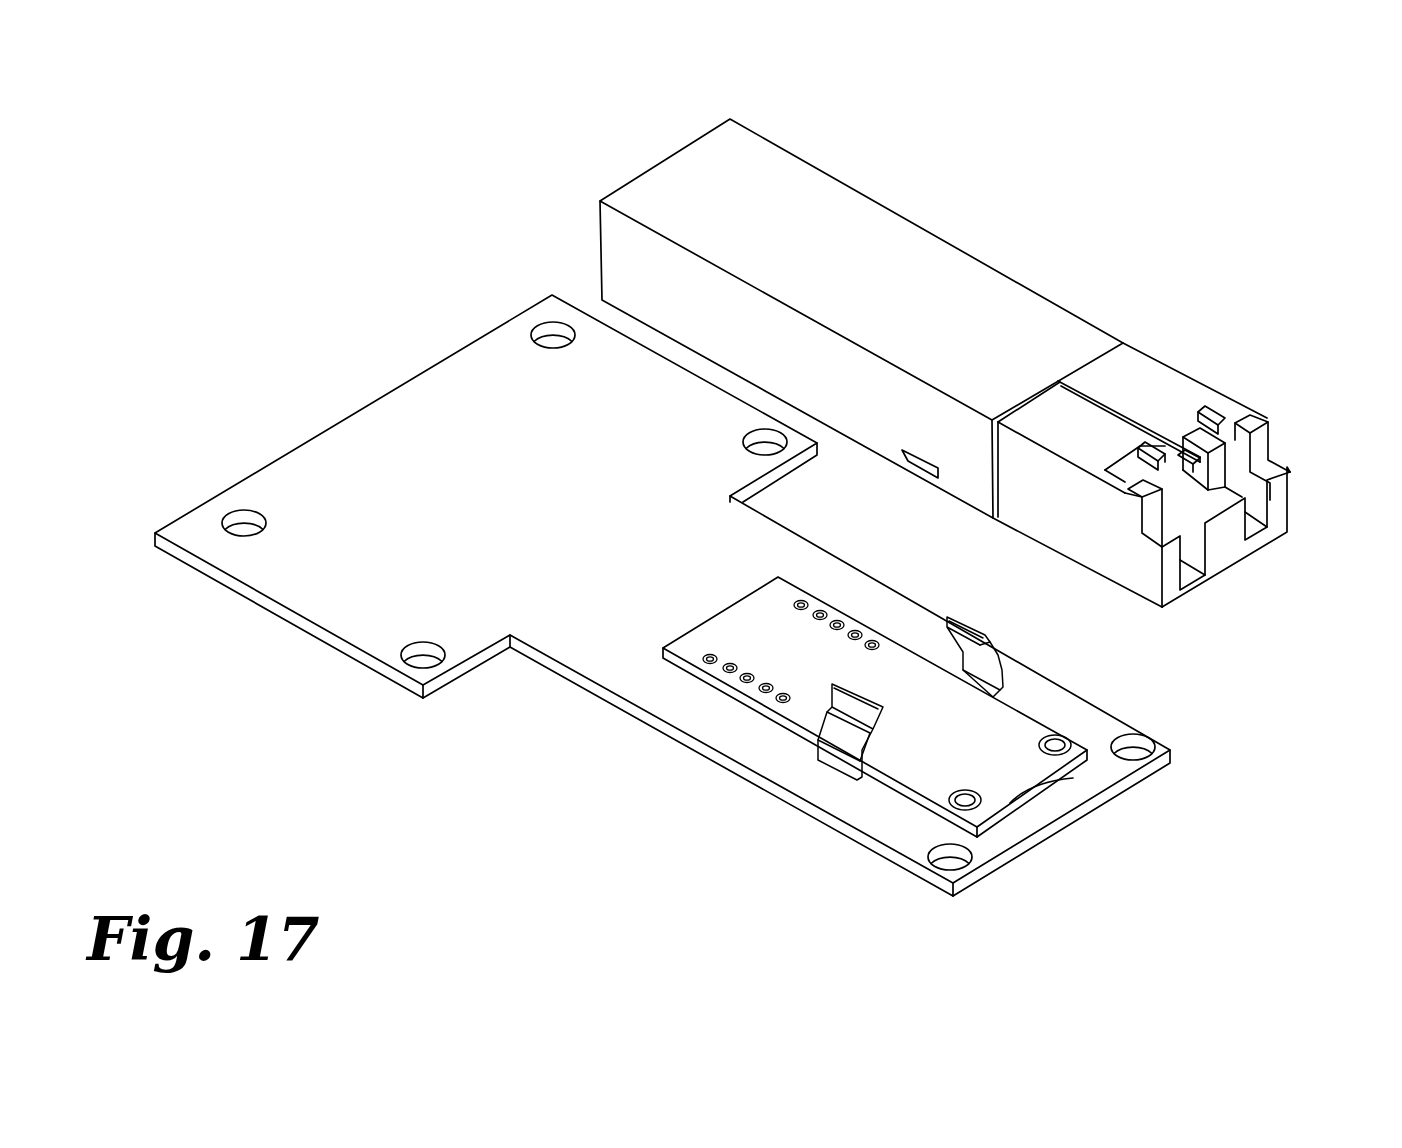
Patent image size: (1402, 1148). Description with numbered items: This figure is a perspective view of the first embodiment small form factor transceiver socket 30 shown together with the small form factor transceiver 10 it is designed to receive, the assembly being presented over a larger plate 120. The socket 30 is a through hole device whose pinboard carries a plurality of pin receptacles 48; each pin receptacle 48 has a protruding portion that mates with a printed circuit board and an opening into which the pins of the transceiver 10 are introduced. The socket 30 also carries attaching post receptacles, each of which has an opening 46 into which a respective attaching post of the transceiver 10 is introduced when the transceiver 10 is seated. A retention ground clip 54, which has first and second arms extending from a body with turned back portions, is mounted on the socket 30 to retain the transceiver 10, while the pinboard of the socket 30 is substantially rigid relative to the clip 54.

The small form factor transceiver 10 is at (853, 188).
The mounting plate 120 is at (596, 683).
The small form factor transceiver socket 30 is at (1037, 782).
The opening 46 is at (948, 800).
The pin receptacle 48 is at (789, 700).
The retention ground clip 54 is at (998, 652).